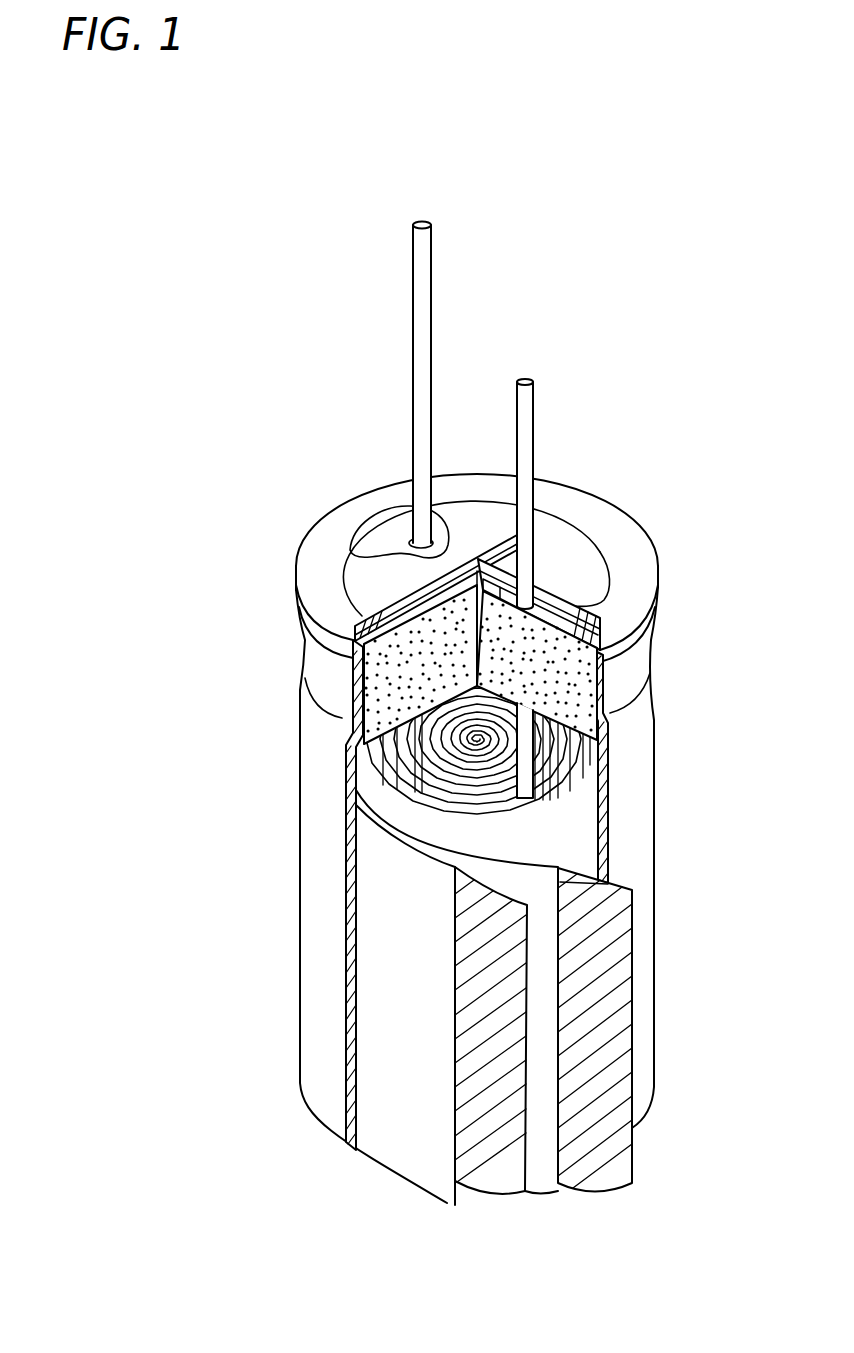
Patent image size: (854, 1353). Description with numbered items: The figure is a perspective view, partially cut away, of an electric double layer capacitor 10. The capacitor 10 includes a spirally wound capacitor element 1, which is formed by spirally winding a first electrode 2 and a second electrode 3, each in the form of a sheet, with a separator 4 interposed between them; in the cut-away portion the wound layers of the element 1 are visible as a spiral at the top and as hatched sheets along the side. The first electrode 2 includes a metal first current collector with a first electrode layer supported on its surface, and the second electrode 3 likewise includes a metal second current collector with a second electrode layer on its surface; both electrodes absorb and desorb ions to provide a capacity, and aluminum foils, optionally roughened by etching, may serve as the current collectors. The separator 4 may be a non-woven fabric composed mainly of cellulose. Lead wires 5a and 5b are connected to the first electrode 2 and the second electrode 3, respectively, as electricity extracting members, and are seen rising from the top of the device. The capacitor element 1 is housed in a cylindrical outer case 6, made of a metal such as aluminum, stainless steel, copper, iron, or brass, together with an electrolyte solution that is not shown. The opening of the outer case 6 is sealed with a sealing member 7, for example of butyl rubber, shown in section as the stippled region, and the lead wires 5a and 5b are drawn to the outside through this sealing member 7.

The electric double layer capacitor 10 is at (290, 283).
The capacitor element 1 is at (348, 797).
The first electrode 2 is at (587, 938).
The second electrode 3 is at (488, 925).
The separator 4 is at (438, 1183).
The lead wire 5a is at (424, 298).
The lead wire 5b is at (525, 412).
The outer case 6 is at (645, 698).
The sealing member 7 is at (385, 680).